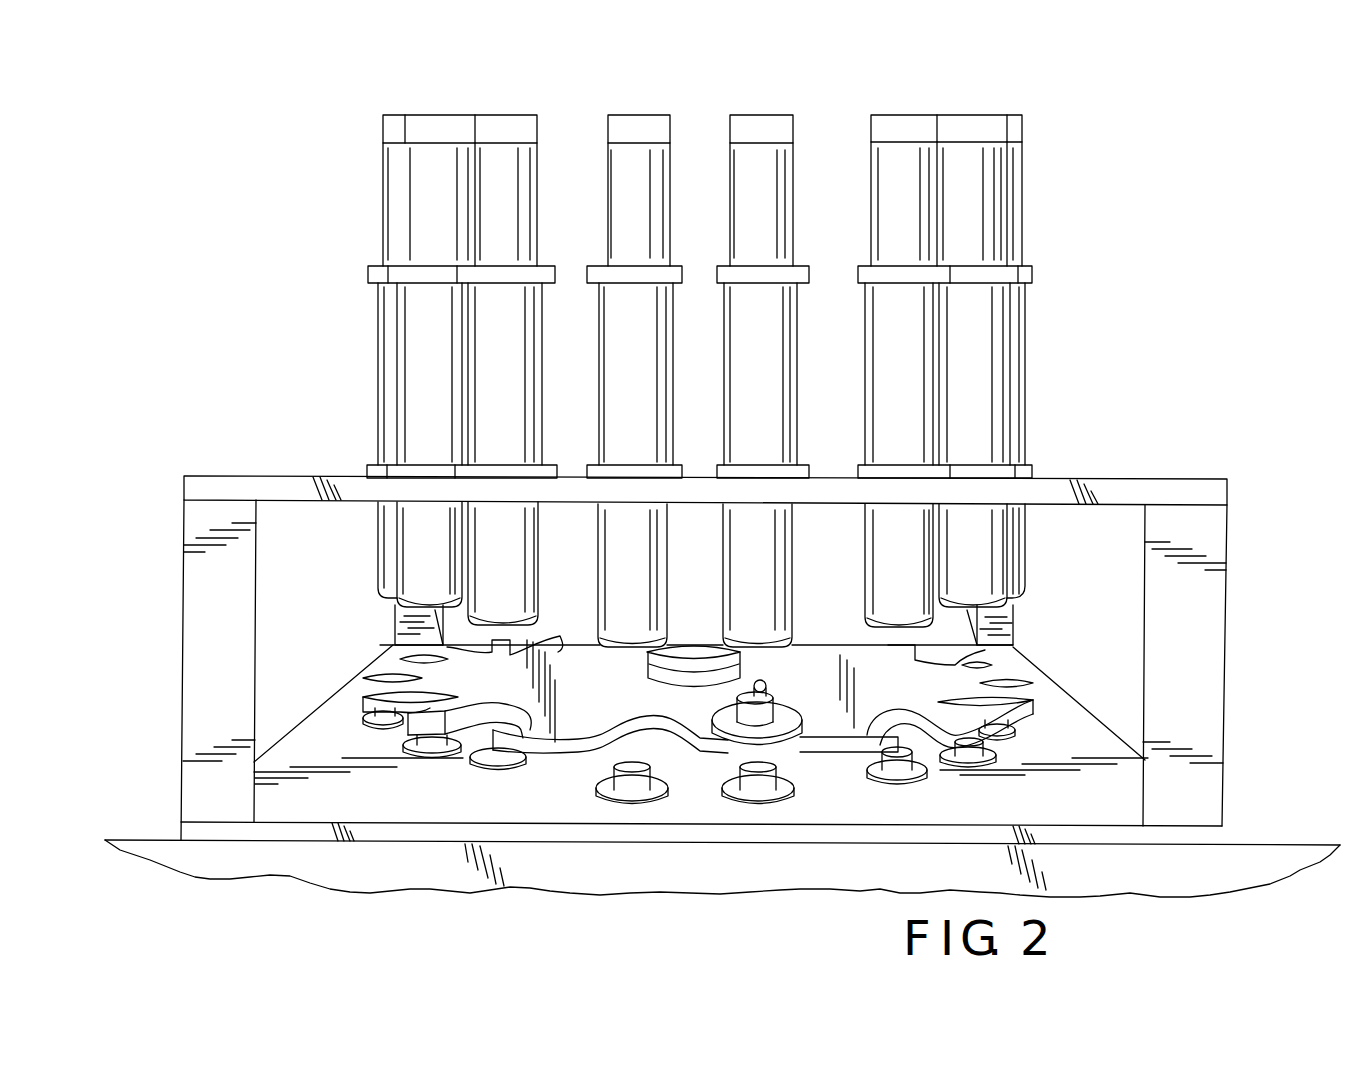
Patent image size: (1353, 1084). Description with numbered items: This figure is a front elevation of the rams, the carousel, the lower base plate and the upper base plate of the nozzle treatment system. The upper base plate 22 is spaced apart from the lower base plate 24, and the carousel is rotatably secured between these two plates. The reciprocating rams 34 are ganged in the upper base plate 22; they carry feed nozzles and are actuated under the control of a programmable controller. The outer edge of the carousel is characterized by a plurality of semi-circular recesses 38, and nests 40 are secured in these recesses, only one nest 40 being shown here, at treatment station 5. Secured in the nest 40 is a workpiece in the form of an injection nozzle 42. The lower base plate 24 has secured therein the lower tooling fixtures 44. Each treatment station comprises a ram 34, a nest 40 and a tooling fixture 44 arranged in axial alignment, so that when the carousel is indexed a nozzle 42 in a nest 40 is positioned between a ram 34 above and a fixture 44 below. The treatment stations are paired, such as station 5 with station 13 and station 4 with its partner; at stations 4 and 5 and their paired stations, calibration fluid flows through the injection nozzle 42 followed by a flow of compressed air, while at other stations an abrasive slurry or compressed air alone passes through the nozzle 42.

The upper base plate 22 is at (1142, 492).
The lower base plate 24 is at (1040, 808).
The reciprocating rams 34 is at (493, 213).
The treatment station 13 is at (690, 577).
The treatment station 5 is at (690, 577).
The semi-circular recesses 38 is at (612, 742).
The nest 40 is at (783, 745).
The injection nozzle 42 is at (772, 698).
The lower tooling fixtures 44 is at (487, 768).
The treatment station 4 is at (717, 85).